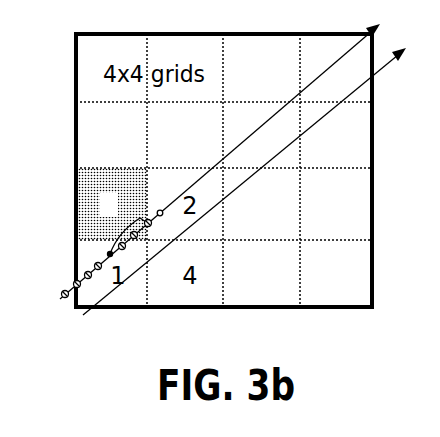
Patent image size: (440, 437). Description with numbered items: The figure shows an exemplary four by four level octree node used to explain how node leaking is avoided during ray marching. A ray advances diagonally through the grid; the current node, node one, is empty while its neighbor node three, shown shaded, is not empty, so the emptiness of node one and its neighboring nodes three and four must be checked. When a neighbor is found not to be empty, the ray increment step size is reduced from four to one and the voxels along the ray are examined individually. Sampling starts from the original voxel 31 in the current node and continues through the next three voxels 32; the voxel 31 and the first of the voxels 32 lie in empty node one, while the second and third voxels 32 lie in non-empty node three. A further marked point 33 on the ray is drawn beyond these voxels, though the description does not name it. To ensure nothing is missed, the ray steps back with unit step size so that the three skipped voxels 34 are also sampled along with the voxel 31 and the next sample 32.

The voxel 31 is at (110, 254).
The next voxels 32 is at (122, 219).
The end point 33 is at (157, 211).
The skipped voxels 34 is at (78, 269).